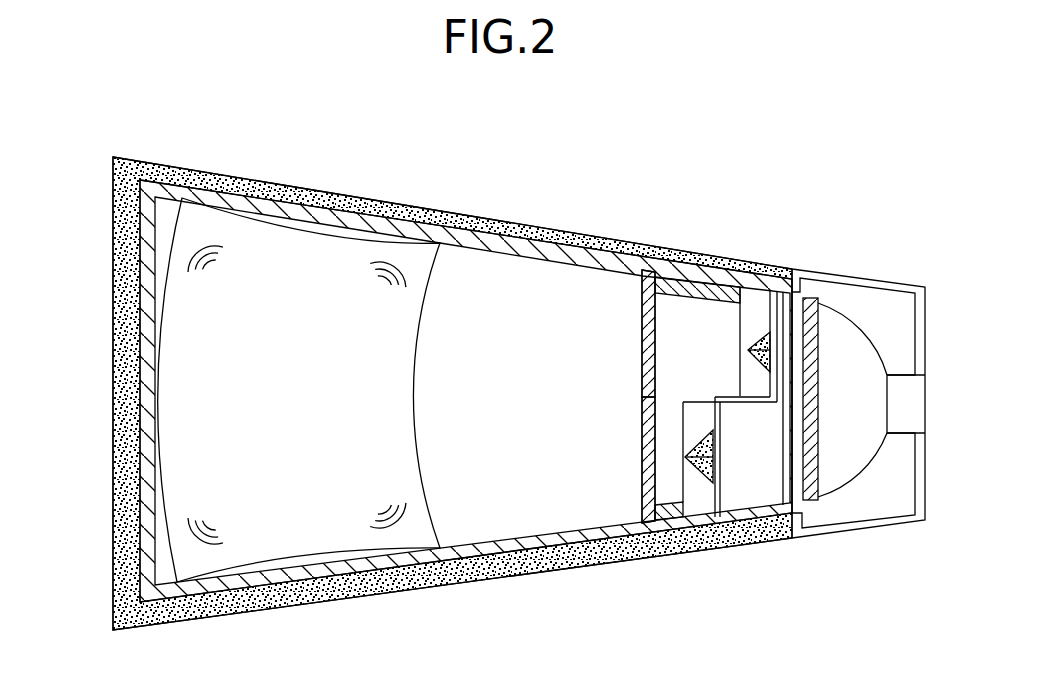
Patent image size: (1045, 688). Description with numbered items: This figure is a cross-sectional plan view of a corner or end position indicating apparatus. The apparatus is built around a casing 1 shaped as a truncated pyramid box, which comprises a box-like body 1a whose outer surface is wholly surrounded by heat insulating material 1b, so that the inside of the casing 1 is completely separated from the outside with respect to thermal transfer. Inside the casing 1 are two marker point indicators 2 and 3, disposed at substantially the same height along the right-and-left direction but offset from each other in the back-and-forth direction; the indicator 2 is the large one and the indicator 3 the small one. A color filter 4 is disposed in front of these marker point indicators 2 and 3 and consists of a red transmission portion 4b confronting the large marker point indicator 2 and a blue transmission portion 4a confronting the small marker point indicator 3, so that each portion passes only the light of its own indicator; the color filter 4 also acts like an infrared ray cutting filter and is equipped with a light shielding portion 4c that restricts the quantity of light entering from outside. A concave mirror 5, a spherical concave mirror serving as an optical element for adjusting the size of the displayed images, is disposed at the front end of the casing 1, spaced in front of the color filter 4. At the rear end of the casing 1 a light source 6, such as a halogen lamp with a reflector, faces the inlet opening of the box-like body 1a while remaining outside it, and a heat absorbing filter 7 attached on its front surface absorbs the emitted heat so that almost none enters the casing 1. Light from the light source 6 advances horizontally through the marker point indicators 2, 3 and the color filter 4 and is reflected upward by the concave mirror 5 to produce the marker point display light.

The casing 1 is at (123, 398).
The box-like body 1a is at (477, 240).
The heat insulating material 1b is at (125, 232).
The marker point indicator 2 is at (705, 478).
The marker point indicator 3 is at (762, 335).
The color filter 4 is at (642, 395).
The blue transmission portion 4a is at (641, 344).
The red transmission portion 4b is at (641, 471).
The light shielding portion 4c is at (692, 305).
The concave mirror 5 is at (265, 235).
The light source 6 is at (842, 330).
The heat absorbing filter 7 is at (820, 467).